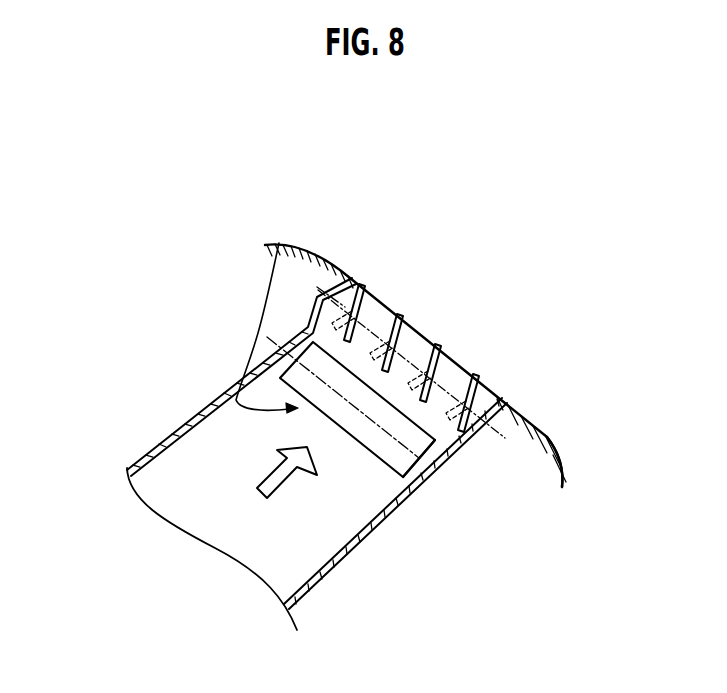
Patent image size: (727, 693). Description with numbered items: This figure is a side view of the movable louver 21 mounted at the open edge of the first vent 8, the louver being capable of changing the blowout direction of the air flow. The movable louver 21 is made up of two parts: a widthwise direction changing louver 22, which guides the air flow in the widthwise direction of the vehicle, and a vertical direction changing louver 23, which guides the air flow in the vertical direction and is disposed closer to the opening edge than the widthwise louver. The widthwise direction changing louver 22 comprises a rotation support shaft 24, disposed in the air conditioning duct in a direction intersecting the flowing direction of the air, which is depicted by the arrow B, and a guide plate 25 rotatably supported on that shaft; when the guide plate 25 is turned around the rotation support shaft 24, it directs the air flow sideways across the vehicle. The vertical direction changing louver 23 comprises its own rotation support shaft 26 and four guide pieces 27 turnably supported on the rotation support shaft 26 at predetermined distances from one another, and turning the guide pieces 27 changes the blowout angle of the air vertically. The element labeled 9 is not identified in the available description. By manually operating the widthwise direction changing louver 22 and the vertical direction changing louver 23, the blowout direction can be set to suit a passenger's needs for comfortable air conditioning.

The movable louver 21 is at (407, 171).
The widthwise direction changing louver 22 is at (278, 244).
The vertical direction changing louver 23 is at (381, 284).
The guide pieces 27 is at (384, 300).
The duct upper wall 9 is at (182, 432).
The rotation support shaft 24 is at (450, 475).
The guide plate 25 is at (357, 430).
The first vent 8 is at (442, 449).
The rotation support shaft 26 is at (496, 432).
The arrow B is at (281, 500).